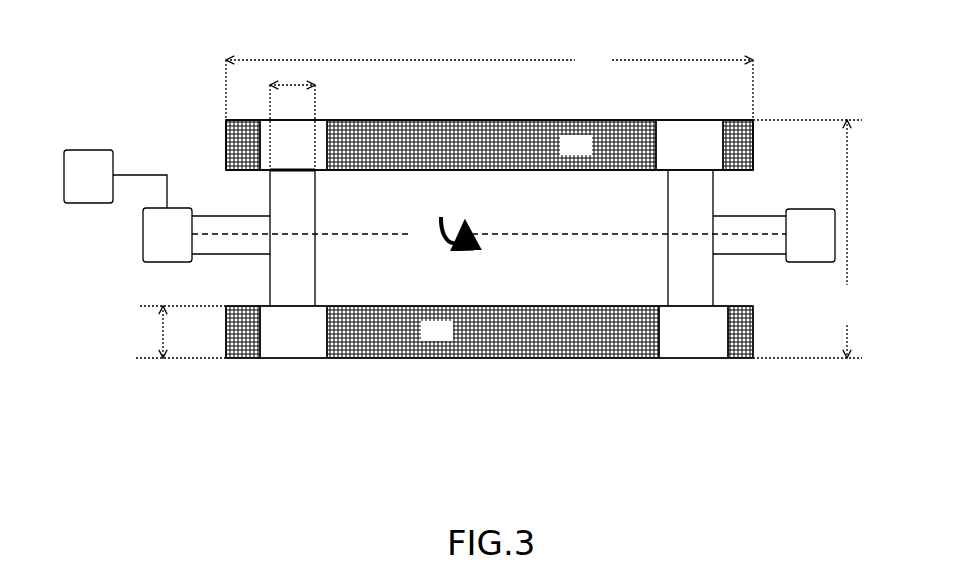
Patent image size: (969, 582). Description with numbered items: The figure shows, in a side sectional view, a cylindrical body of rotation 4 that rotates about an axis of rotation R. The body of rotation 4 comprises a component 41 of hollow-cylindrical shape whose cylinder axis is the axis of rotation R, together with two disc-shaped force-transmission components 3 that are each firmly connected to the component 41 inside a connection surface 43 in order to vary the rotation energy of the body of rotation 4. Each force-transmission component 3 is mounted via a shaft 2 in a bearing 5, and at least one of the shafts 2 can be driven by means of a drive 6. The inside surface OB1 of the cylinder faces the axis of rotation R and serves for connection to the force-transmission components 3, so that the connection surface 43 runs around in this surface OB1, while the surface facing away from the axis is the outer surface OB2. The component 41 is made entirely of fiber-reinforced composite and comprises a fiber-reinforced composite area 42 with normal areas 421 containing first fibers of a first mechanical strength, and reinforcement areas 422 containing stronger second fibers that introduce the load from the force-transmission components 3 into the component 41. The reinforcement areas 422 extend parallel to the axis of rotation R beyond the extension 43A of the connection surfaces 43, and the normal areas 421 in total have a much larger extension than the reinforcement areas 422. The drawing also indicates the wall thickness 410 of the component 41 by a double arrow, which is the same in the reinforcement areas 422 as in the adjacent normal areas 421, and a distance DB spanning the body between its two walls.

The shaft 2 is at (211, 207).
The force-transmission component 3 is at (305, 282).
The cylindrical body of rotation 4 is at (165, 112).
The bearing 5 is at (489, 235).
The drive 6 is at (115, 179).
The component 41 is at (455, 130).
The fiber-reinforced composite area 42 is at (489, 85).
The connection surface 43 is at (292, 172).
The extension of the connection surface 43A is at (284, 79).
The bar thickness 410 is at (171, 332).
The normal area 421 is at (243, 455).
The reinforcement area 422 is at (226, 358).
The axis of rotation R is at (440, 230).
The inside surface of the cylinder OB1 is at (510, 172).
The outer surface OB2 is at (395, 112).
The bar spacing distance DB is at (807, 239).